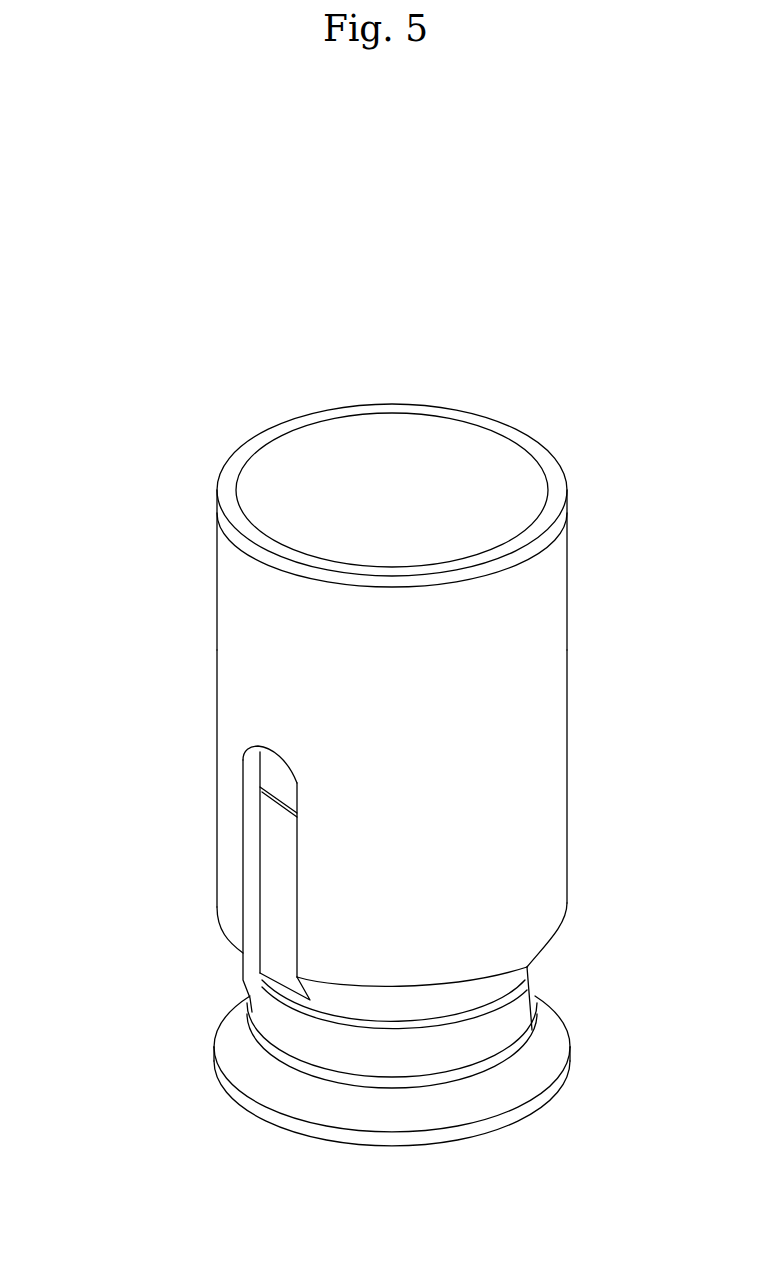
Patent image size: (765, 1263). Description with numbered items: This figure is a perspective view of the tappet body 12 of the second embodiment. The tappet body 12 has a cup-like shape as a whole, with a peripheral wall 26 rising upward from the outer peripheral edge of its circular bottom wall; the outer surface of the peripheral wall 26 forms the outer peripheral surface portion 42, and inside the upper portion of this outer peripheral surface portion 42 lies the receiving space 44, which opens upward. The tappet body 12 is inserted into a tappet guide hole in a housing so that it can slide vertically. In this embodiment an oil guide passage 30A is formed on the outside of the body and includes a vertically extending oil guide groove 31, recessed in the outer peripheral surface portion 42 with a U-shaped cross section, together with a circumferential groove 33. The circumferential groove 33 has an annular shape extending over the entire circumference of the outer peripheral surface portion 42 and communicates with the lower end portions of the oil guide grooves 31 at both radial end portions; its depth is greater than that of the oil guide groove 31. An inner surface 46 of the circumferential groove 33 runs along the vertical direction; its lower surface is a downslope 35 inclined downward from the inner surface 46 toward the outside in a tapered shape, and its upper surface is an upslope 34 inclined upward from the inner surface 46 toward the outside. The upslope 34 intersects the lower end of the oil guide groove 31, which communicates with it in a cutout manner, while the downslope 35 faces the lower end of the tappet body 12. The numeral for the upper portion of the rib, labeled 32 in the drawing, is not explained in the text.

The tappet body 12 is at (367, 402).
The receiving space 44 is at (435, 517).
The outer peripheral surface portion 42 is at (540, 593).
The peripheral wall 26 is at (540, 686).
The oil guide passage 30A is at (120, 710).
The rib top end portion 32 is at (273, 780).
The oil guide groove 31 is at (275, 900).
The circumferential groove 33 is at (252, 1008).
The upslope 34 is at (530, 968).
The inner surface 46 is at (513, 1017).
The downslope 35 is at (550, 1043).